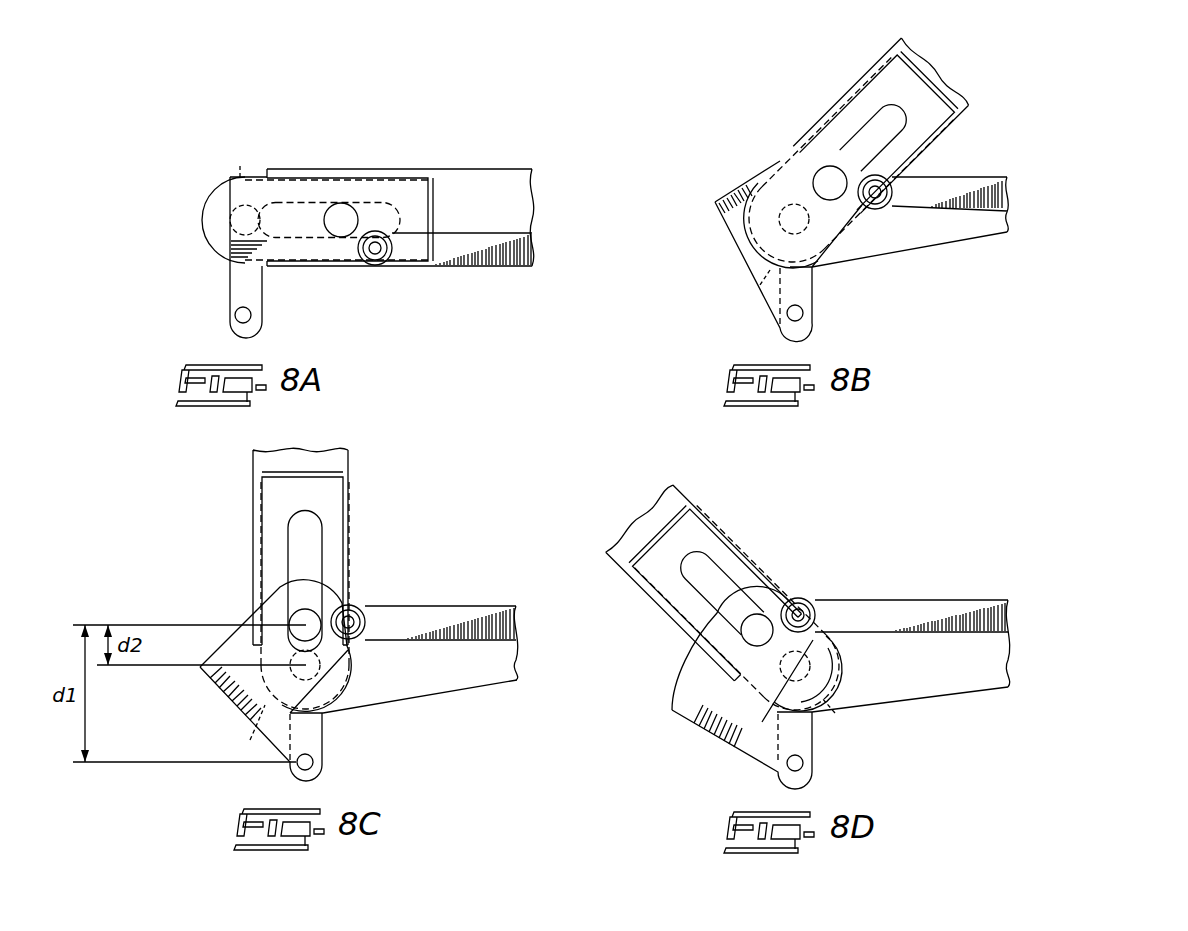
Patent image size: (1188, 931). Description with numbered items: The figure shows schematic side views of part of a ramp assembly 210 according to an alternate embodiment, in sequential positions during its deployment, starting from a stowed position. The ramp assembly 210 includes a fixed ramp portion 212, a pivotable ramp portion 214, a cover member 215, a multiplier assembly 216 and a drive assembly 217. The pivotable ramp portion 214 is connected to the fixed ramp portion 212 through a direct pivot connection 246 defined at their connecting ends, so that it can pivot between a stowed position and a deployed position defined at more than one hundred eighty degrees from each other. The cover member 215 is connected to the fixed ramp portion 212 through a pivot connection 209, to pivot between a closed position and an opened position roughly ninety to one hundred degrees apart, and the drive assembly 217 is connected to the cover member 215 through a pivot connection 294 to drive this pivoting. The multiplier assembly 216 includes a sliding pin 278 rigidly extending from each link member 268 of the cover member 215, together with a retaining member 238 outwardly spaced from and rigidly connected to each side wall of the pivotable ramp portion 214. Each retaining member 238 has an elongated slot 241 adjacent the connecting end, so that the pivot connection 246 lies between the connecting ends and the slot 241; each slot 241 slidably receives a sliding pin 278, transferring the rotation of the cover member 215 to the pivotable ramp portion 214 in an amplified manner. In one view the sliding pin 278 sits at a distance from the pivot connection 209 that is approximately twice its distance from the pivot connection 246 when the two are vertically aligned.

In FIG. 8A, the pivot connection 209 is at (246, 316).
In FIG. 8B, the pivot connection 209 is at (798, 313).
In FIG. 8C, the pivot connection 209 is at (309, 762).
In FIG. 8D, the pivot connection 209 is at (799, 763).
In FIG. 8A, the ramp assembly 210 is at (207, 138).
In FIG. 8B, the fixed ramp portion 212 is at (1006, 213).
In FIG. 8C, the fixed ramp portion 212 is at (455, 694).
In FIG. 8D, the fixed ramp portion 212 is at (932, 698).
In FIG. 8A, the pivotable ramp portion 214 is at (466, 174).
In FIG. 8B, the pivotable ramp portion 214 is at (906, 44).
In FIG. 8C, the pivotable ramp portion 214 is at (352, 485).
In FIG. 8D, the pivotable ramp portion 214 is at (738, 541).
In FIG. 8A, the cover member 215 is at (298, 266).
In FIG. 8B, the cover member 215 is at (777, 251).
In FIG. 8C, the cover member 215 is at (270, 680).
In FIG. 8D, the cover member 215 is at (769, 690).
In FIG. 8A, the multiplier assembly 216 is at (292, 185).
In FIG. 8B, the multiplier assembly 216 is at (823, 161).
In FIG. 8C, the multiplier assembly 216 is at (280, 613).
In FIG. 8D, the multiplier assembly 216 is at (731, 613).
In FIG. 8A, the drive assembly 217 is at (487, 270).
In FIG. 8B, the drive assembly 217 is at (976, 222).
In FIG. 8C, the drive assembly 217 is at (449, 604).
In FIG. 8D, the drive assembly 217 is at (914, 598).
In FIG. 8A, the retaining member 238 is at (219, 203).
In FIG. 8B, the retaining member 238 is at (823, 118).
In FIG. 8C, the retaining member 238 is at (331, 685).
In FIG. 8D, the retaining member 238 is at (765, 570).
In FIG. 8A, the elongated slot 241 is at (390, 212).
In FIG. 8B, the elongated slot 241 is at (873, 135).
In FIG. 8C, the elongated slot 241 is at (303, 529).
In FIG. 8D, the elongated slot 241 is at (703, 566).
In FIG. 8A, the direct pivot connection 246 is at (241, 166).
In FIG. 8B, the direct pivot connection 246 is at (760, 285).
In FIG. 8C, the direct pivot connection 246 is at (250, 740).
In FIG. 8D, the direct pivot connection 246 is at (835, 713).
In FIG. 8A, the link member 268 is at (257, 183).
In FIG. 8B, the link member 268 is at (748, 190).
In FIG. 8C, the link member 268 is at (216, 677).
In FIG. 8D, the link member 268 is at (690, 698).
In FIG. 8A, the sliding pin 278 is at (341, 218).
In FIG. 8B, the sliding pin 278 is at (828, 182).
In FIG. 8C, the sliding pin 278 is at (307, 621).
In FIG. 8D, the sliding pin 278 is at (755, 631).
In FIG. 8A, the pivot connection 294 is at (379, 262).
In FIG. 8B, the pivot connection 294 is at (880, 210).
In FIG. 8C, the pivot connection 294 is at (354, 607).
In FIG. 8D, the pivot connection 294 is at (811, 601).